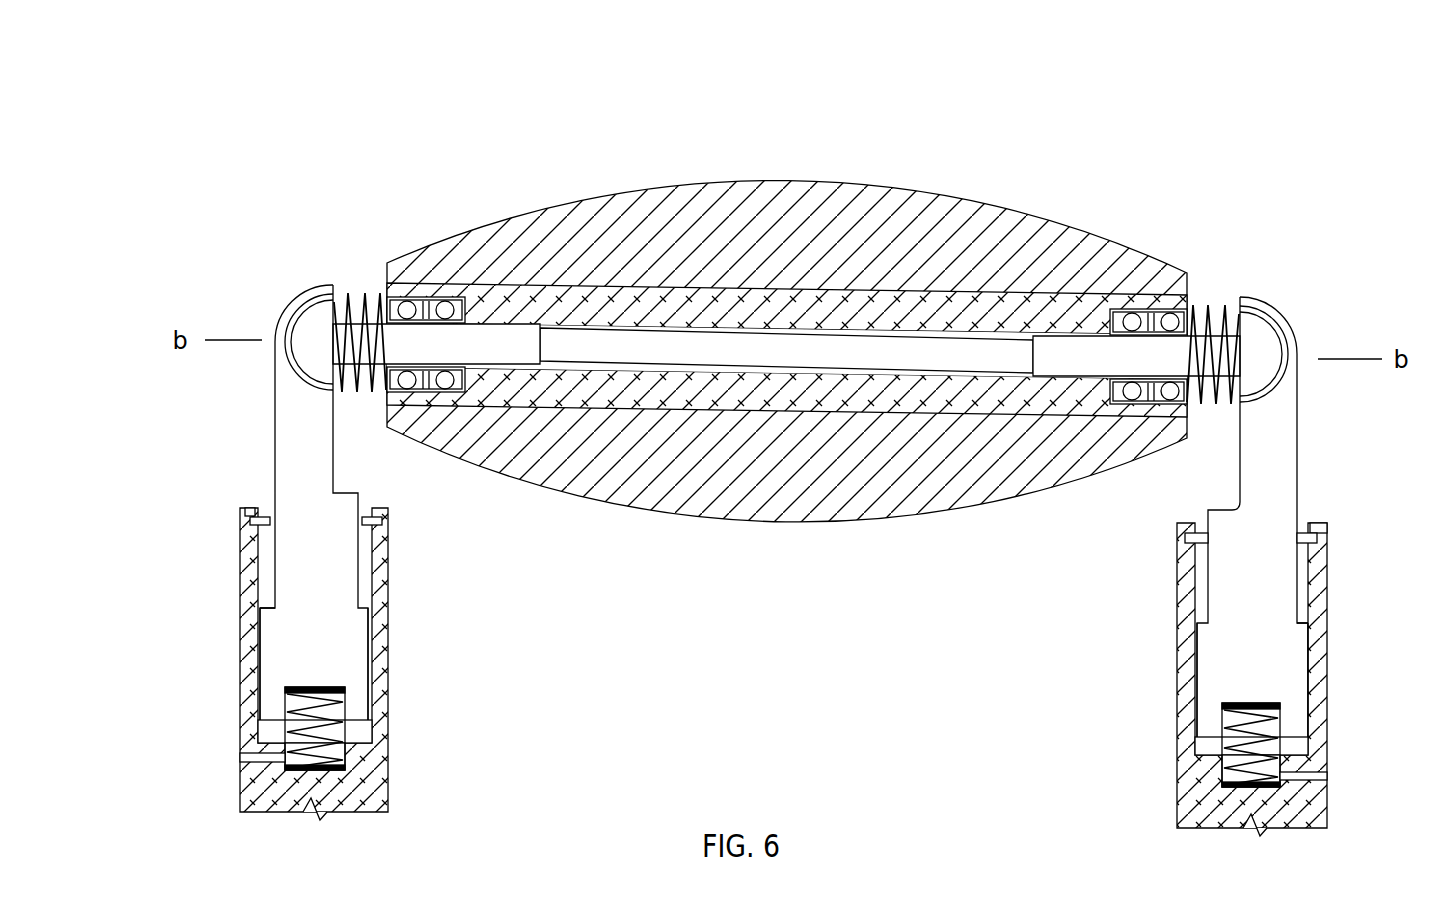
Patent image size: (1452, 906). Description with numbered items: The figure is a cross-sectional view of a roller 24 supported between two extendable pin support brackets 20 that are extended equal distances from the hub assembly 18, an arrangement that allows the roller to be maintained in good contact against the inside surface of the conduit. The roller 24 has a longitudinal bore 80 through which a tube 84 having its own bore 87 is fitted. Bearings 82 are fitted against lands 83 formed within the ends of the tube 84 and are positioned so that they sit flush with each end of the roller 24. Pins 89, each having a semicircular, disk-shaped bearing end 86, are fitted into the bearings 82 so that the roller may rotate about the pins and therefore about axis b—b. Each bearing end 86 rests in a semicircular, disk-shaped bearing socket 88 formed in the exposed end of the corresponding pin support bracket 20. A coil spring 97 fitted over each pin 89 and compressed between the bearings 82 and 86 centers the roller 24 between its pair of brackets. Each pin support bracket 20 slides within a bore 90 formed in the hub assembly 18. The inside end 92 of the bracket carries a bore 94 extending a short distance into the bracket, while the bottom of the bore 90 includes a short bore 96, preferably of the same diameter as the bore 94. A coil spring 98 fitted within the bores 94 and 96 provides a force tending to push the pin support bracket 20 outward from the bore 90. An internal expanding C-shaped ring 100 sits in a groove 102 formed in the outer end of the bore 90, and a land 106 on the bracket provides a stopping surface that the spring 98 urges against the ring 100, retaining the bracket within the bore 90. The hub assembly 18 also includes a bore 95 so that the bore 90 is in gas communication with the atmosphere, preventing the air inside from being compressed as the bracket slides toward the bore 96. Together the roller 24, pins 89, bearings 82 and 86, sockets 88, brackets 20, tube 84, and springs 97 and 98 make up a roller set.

The hub assembly 18 is at (245, 635).
The pin support bracket 20 is at (273, 393).
The roller 24 is at (825, 183).
The longitudinal bore 80 is at (760, 287).
The bearing 82 is at (432, 298).
The land 83 is at (452, 392).
The tube 84 is at (672, 303).
The bearing end 86 is at (318, 318).
The bore 87 is at (598, 347).
The bearing socket 88 is at (272, 316).
The pin 89 is at (525, 345).
The bore 90 is at (345, 735).
The inside end 92 is at (258, 733).
The bore 94 is at (328, 705).
The bore 95 is at (250, 762).
The short bore 96 is at (345, 765).
The coil spring 97 is at (345, 298).
The coil spring 98 is at (300, 690).
The C-shaped ring 100 is at (265, 512).
The groove 102 is at (250, 518).
The land 106 is at (268, 600).